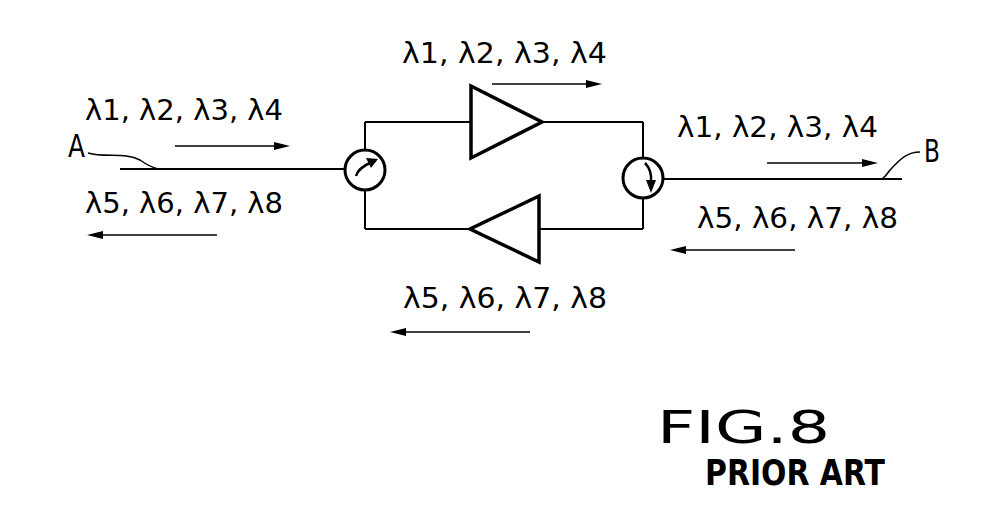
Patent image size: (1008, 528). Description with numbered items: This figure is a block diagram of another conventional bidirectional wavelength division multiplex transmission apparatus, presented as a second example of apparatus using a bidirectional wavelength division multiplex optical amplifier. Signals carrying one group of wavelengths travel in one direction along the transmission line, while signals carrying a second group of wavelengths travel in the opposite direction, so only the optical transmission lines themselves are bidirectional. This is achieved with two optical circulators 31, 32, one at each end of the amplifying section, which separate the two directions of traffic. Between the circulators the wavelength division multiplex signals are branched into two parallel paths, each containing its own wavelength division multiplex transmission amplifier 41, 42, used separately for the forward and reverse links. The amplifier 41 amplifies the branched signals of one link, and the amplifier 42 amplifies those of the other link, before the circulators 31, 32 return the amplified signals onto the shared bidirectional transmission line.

The optical circulator 31 is at (356, 154).
The optical circulator 32 is at (626, 168).
The wavelength division multiplex transmission amplifier 41 is at (470, 100).
The wavelength division multiplex transmission amplifier 42 is at (540, 206).